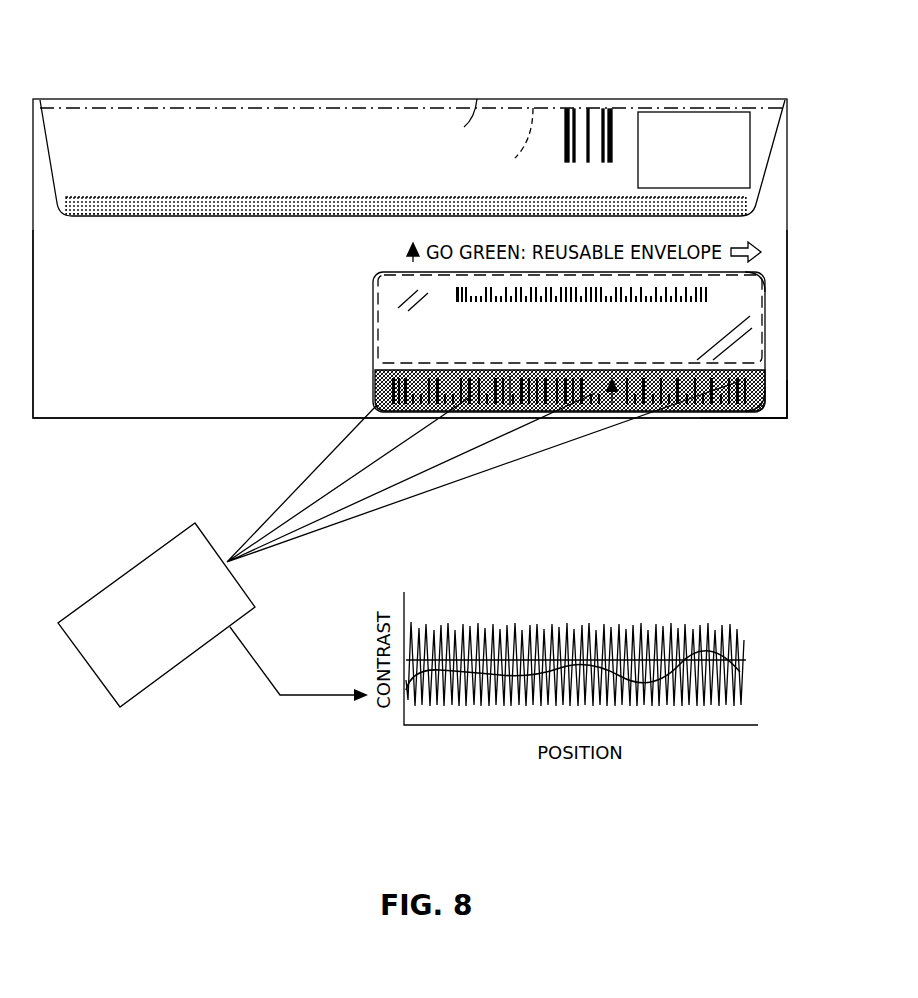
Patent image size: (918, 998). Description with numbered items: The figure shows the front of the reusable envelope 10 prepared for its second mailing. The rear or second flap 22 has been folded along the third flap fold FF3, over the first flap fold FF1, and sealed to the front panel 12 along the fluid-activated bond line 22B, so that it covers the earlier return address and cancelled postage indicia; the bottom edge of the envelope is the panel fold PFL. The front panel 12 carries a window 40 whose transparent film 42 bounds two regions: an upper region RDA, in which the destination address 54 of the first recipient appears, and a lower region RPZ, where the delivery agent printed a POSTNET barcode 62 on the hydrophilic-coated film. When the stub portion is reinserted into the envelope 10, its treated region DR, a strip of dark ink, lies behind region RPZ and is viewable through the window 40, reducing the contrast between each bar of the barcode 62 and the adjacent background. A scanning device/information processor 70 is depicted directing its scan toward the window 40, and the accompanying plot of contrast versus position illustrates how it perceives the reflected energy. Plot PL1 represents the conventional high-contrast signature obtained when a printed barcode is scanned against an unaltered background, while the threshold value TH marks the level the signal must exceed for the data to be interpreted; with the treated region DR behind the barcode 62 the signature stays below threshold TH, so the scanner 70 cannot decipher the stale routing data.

The reusable envelope 10 is at (263, 84).
The front panel 12 is at (192, 302).
The second flap 22 is at (372, 170).
The bond line 22B is at (140, 218).
The window 40 is at (376, 282).
The destination address 54 is at (452, 304).
The treated region DR is at (370, 370).
The transparent film 42 is at (517, 400).
The POSTNET barcode 62 is at (612, 400).
The scanning device/information processor 70 is at (163, 625).
The first flap fold FF1 is at (508, 148).
The third flap fold FF3 is at (452, 125).
The first region RDA is at (758, 276).
The second region RPZ is at (763, 398).
The panel fold PFL is at (740, 416).
The contrast plot PL1 is at (560, 648).
The threshold value TH is at (732, 630).